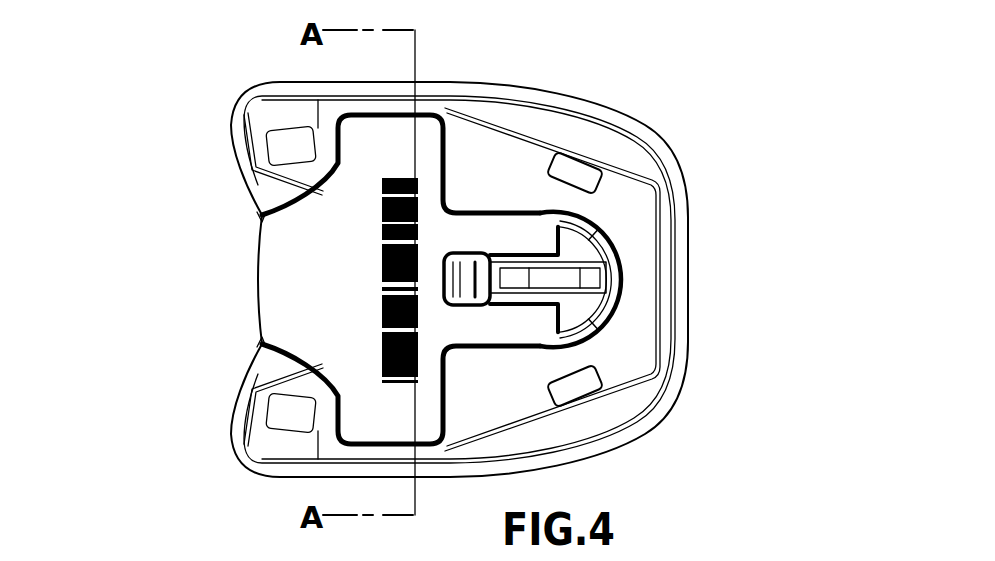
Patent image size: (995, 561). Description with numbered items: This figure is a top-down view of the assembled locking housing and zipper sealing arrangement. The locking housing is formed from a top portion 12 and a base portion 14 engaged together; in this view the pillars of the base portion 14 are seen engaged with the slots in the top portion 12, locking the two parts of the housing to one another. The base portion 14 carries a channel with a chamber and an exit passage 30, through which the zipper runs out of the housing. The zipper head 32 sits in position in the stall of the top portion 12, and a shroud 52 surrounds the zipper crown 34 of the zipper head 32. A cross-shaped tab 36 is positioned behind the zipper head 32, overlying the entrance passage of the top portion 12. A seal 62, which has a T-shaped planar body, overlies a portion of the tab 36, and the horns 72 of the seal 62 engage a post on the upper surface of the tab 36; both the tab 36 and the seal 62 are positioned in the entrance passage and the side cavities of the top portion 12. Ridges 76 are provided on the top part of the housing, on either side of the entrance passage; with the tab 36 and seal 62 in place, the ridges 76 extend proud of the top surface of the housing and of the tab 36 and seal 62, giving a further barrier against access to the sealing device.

The top portion of the locking housing 12 is at (685, 343).
The base portion of the locking housing 14 is at (668, 118).
The exit passage 30 is at (703, 232).
The zipper head 32 is at (592, 310).
The zipper crown 34 is at (593, 256).
The tab 36 is at (529, 331).
The shroud 52 is at (520, 236).
The seal 62 is at (288, 259).
The horns 72 is at (470, 225).
The ridges 76 is at (223, 425).